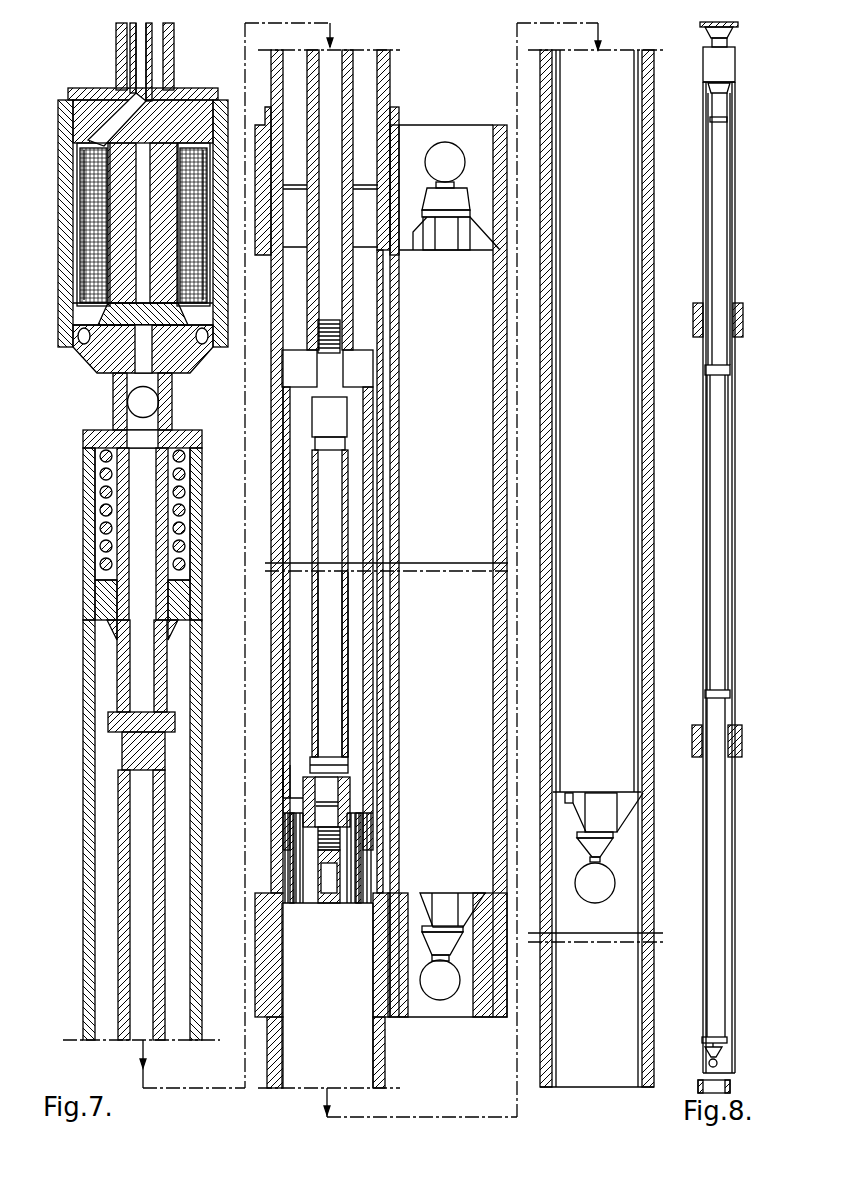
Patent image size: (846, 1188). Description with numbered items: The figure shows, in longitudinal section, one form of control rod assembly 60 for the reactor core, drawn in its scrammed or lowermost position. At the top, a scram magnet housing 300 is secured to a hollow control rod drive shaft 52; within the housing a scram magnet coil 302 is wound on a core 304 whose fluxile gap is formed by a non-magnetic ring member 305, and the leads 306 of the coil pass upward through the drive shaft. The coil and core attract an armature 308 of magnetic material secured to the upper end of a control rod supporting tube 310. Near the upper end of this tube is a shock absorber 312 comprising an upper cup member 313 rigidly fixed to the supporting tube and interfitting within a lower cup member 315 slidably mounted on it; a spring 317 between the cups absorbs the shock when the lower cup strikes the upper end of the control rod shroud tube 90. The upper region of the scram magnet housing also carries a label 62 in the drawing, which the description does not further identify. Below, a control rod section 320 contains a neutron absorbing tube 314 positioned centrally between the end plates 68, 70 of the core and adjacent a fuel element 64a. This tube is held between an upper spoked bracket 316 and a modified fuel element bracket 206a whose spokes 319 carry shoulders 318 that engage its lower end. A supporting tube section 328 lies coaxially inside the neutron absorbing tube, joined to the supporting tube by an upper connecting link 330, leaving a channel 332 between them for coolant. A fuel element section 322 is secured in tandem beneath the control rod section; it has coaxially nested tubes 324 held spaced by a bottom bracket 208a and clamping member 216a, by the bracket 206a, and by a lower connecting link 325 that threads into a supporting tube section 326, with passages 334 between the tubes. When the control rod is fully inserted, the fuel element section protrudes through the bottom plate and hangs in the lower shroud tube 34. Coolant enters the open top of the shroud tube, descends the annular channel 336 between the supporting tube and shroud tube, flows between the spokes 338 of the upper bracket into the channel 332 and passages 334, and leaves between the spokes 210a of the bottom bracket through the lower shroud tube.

In FIG. 7, the control rod drive shaft 52 is at (116, 36).
In FIG. 7, the leads 306 is at (138, 68).
In FIG. 7, the solenoid housing 62 is at (34, 143).
In FIG. 7, the scram magnet housing 300 is at (58, 226).
In FIG. 7, the scram magnet coil 302 is at (90, 250).
In FIG. 7, the core 304 is at (88, 283).
In FIG. 7, the non-magnetic ring member 305 is at (78, 330).
In FIG. 7, the armature 308 is at (100, 360).
In FIG. 8, the armature 308 is at (738, 25).
In FIG. 7, the upper cup member 313 is at (195, 438).
In FIG. 7, the control rod assembly 60 is at (48, 467).
In FIG. 8, the control rod assembly 60 is at (746, 101).
In FIG. 7, the shock absorber 312 is at (95, 510).
In FIG. 8, the shock absorber 312 is at (730, 63).
In FIG. 7, the spring 317 is at (97, 543).
In FIG. 7, the lower cup member 315 is at (100, 600).
In FIG. 7, the control rod shroud tube 90 is at (83, 690).
In FIG. 8, the control rod shroud tube 90 is at (735, 155).
In FIG. 7, the control rod supporting tube 310 is at (120, 758).
In FIG. 8, the control rod supporting tube 310 is at (722, 220).
In FIG. 7, the annular channel 336 is at (98, 878).
In FIG. 7, the upper end plate 68 is at (268, 250).
In FIG. 8, the upper end plate 68 is at (742, 306).
In FIG. 7, the upper spoked bracket 316 is at (303, 350).
In FIG. 8, the upper spoked bracket 316 is at (722, 372).
In FIG. 7, the spokes 338 is at (290, 360).
In FIG. 7, the upper connecting link 330 is at (333, 392).
In FIG. 7, the fuel element 64a is at (448, 402).
In FIG. 7, the channel 332 is at (357, 488).
In FIG. 7, the control rod section 320 is at (372, 527).
In FIG. 8, the control rod section 320 is at (727, 517).
In FIG. 7, the neutron absorbing tube 314 is at (290, 625).
In FIG. 7, the supporting tube section 328 is at (350, 714).
In FIG. 7, the spokes 319 is at (370, 775).
In FIG. 7, the shoulders 318 is at (370, 792).
In FIG. 7, the modified fuel element bracket 206a is at (350, 806).
In FIG. 8, the modified fuel element bracket 206a is at (720, 695).
In FIG. 7, the lower connecting link 325 is at (340, 833).
In FIG. 7, the coaxially nested tubes 324 is at (368, 862).
In FIG. 7, the bottom plate 70 is at (263, 896).
In FIG. 8, the bottom plate 70 is at (737, 730).
In FIG. 7, the passages 334 is at (297, 903).
In FIG. 7, the supporting tube section 326 is at (338, 900).
In FIG. 7, the fuel element section 322 is at (313, 1040).
In FIG. 8, the fuel element section 322 is at (725, 880).
In FIG. 7, the spokes 210a is at (632, 822).
In FIG. 7, the clamping member 216a is at (585, 848).
In FIG. 7, the bottom bracket 208a is at (612, 840).
In FIG. 8, the bottom bracket 208a is at (727, 1040).
In FIG. 8, the lower shroud tube 34 is at (733, 975).